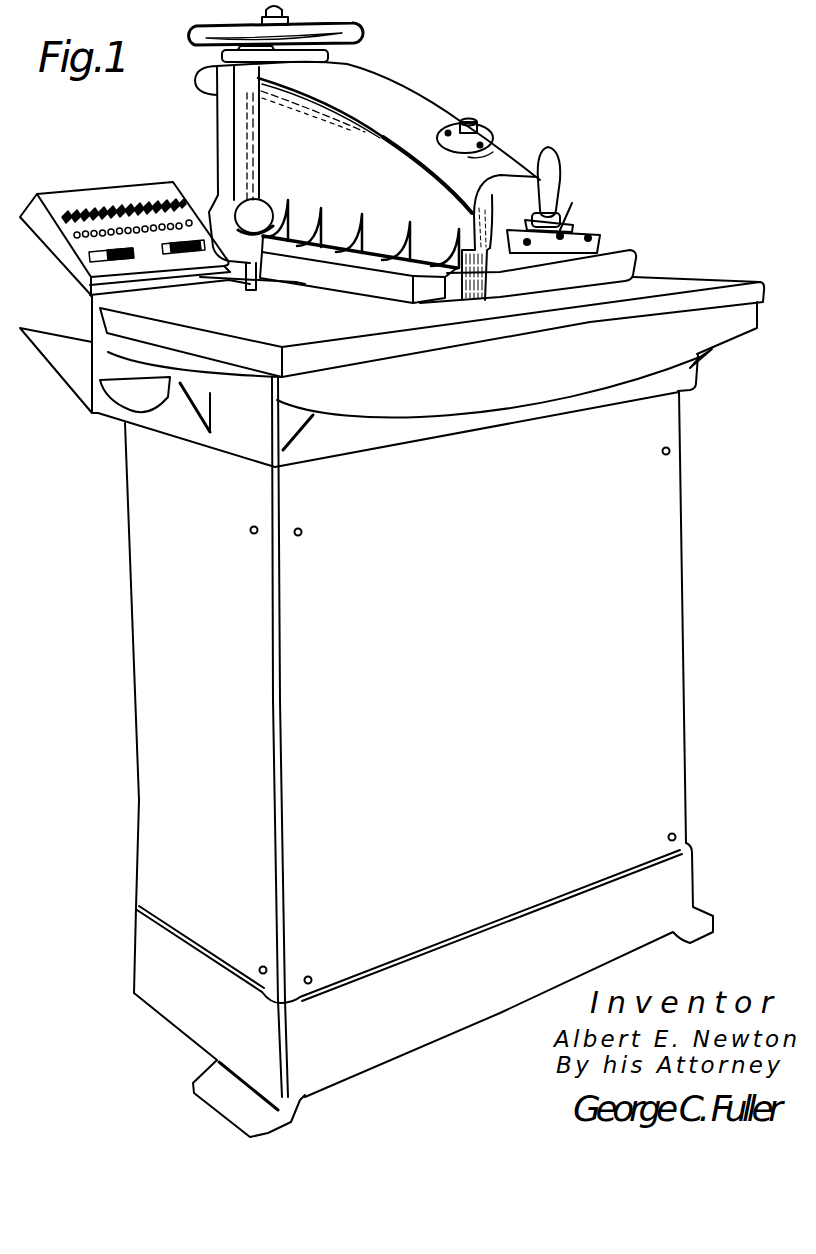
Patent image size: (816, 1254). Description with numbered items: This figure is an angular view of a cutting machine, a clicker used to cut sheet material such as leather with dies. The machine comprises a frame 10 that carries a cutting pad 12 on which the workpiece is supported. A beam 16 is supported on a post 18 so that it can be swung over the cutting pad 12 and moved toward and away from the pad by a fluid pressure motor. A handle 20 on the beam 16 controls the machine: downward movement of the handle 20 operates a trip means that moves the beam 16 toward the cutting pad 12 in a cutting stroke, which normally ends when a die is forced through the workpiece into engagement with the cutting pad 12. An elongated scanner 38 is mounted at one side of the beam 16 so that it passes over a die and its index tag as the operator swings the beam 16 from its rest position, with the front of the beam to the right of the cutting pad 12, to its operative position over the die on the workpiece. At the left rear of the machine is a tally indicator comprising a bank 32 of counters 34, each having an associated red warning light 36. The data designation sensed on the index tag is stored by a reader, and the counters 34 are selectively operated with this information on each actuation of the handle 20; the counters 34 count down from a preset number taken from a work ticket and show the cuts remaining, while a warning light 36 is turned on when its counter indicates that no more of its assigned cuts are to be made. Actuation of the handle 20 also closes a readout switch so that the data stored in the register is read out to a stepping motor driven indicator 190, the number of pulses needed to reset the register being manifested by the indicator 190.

The frame 10 is at (686, 867).
The cutting pad 12 is at (665, 267).
The beam 16 is at (397, 90).
The post 18 is at (245, 266).
The handle 20 is at (561, 159).
The bank of counters 32 is at (57, 197).
The counters 34 is at (125, 207).
The red warning light 36 is at (191, 221).
The scanner 38 is at (345, 284).
The stepping motor driven indicator 190 is at (120, 255).